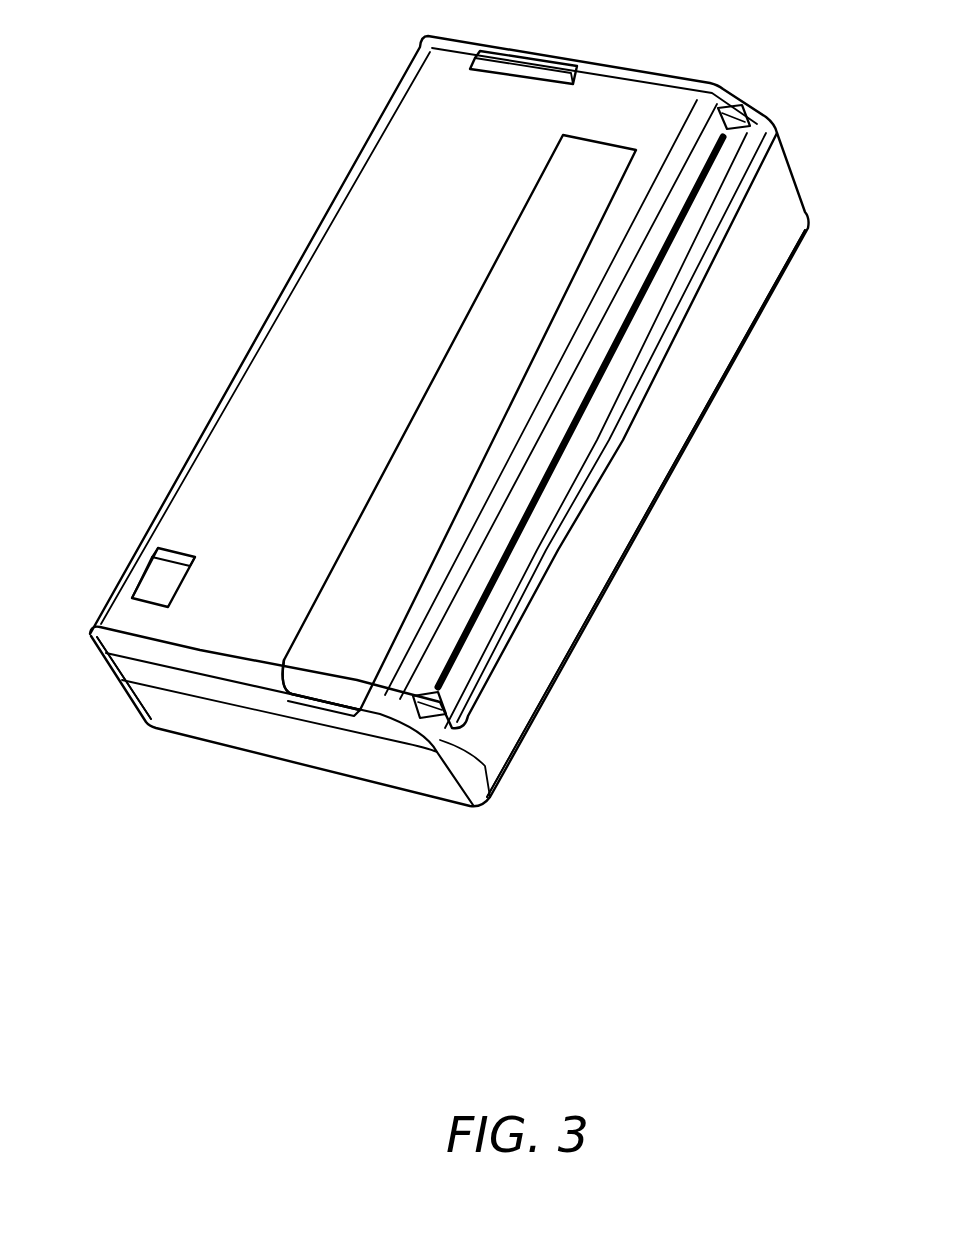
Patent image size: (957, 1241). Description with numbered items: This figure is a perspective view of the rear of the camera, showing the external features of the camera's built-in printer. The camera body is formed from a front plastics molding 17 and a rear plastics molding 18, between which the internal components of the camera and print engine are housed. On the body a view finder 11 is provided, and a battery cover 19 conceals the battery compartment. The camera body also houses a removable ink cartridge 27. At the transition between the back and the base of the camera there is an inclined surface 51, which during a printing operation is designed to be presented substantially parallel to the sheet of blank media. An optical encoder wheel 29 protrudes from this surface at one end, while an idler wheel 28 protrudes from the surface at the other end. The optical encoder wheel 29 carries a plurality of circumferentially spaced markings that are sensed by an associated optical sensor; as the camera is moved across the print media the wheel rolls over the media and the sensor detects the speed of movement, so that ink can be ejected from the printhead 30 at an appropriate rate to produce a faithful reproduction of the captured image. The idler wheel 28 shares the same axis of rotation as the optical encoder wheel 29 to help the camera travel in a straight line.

The view finder 11 is at (153, 575).
The front plastics molding 17 is at (505, 740).
The rear plastics molding 18 is at (132, 668).
The battery cover 19 is at (522, 66).
The removable ink cartridge 27 is at (330, 653).
The idler wheel 28 is at (435, 690).
The optical encoder wheel 29 is at (745, 108).
The printhead 30 is at (556, 465).
The inclined surface 51 is at (598, 352).